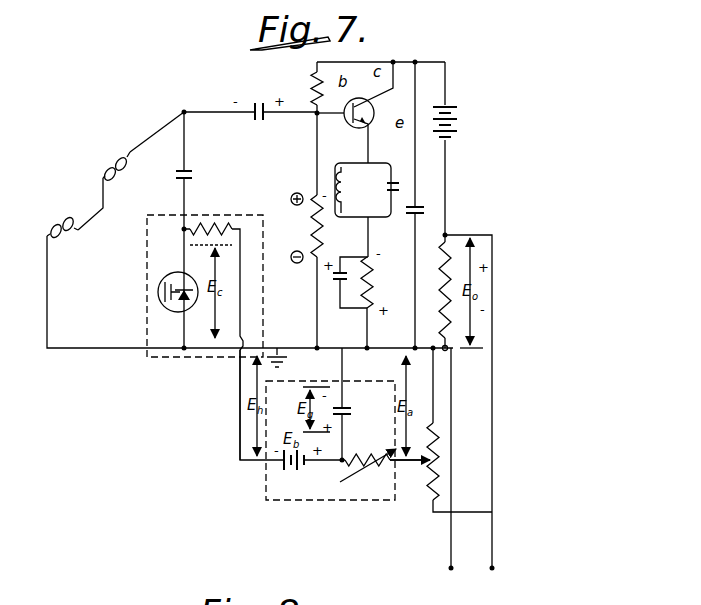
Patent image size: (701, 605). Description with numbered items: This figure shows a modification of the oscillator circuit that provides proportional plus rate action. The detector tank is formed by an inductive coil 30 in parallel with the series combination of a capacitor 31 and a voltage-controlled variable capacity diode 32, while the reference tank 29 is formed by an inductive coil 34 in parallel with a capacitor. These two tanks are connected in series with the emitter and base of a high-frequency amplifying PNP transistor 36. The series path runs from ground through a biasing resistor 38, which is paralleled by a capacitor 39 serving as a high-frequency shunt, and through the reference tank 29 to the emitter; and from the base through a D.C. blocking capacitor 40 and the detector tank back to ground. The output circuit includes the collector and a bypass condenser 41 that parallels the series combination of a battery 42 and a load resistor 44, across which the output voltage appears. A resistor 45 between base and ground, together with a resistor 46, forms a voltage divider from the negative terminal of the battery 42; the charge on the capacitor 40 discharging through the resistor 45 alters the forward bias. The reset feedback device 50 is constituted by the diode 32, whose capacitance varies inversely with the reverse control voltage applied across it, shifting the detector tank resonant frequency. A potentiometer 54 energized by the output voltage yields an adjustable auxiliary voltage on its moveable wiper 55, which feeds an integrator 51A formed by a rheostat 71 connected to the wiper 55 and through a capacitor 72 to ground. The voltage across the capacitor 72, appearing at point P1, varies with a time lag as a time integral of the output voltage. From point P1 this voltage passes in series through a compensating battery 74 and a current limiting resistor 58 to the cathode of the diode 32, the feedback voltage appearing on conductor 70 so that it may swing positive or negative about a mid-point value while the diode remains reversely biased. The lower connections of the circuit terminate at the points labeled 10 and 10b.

The output terminal 10 is at (492, 570).
The output terminal 10b is at (451, 570).
The reference tank 29 is at (369, 187).
The inductive coil 30 is at (108, 170).
The capacitor 31 is at (192, 175).
The voltage-controlled variable capacity diode 32 is at (177, 278).
The inductive coil 34 is at (336, 186).
The transistor 36 is at (354, 127).
The biasing resistor 38 is at (370, 284).
The capacitor 39 is at (336, 290).
The D.C. blocking capacitor 40 is at (257, 100).
The bypass condenser 41 is at (425, 210).
The battery 42 is at (456, 112).
The load resistor 44 is at (441, 296).
The resistor 45 is at (323, 246).
The resistor 46 is at (314, 82).
The reset feedback device 50 is at (146, 238).
The integrator 51A is at (318, 500).
The potentiometer 54 is at (434, 505).
The moveable wiper 55 is at (422, 465).
The current limiting resistor 58 is at (225, 226).
The conductor 70 is at (240, 428).
The rheostat 71 is at (370, 452).
The capacitor 72 is at (352, 410).
The battery 74 is at (285, 468).
The point P1 is at (343, 486).